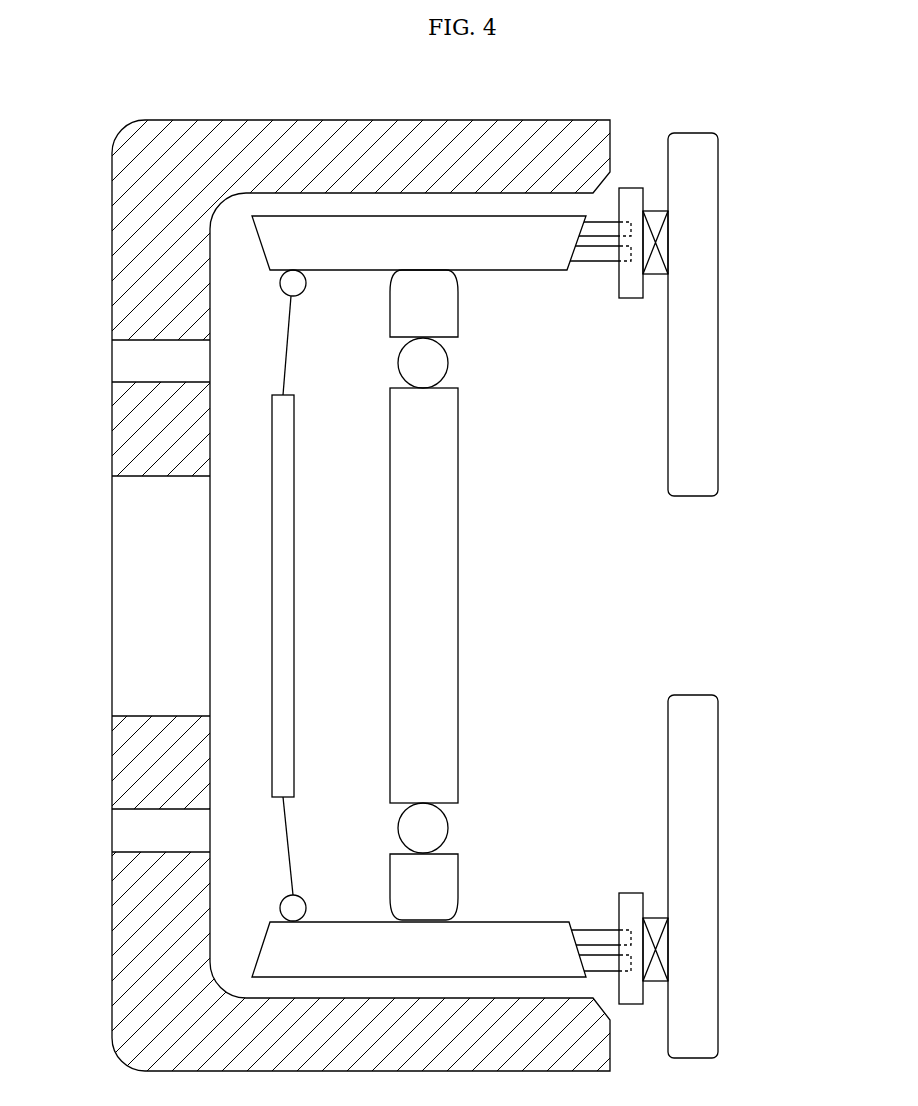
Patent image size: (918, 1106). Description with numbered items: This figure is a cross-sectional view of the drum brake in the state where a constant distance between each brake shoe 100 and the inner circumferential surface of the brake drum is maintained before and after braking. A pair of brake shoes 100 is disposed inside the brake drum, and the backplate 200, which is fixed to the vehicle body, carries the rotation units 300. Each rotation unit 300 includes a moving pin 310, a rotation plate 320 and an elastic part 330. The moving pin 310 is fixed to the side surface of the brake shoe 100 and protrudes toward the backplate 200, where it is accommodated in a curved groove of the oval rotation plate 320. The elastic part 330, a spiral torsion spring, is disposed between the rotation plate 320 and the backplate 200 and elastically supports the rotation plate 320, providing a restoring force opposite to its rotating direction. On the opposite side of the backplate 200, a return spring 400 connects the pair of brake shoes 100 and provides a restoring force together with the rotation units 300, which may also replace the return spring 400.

The brake shoe 100 is at (512, 260).
The backplate 200 is at (705, 469).
The rotation unit 300 is at (731, 598).
The moving pin 310 is at (603, 250).
The rotation plate 320 is at (635, 220).
The elastic part 330 is at (730, 596).
The return spring 400 is at (278, 596).